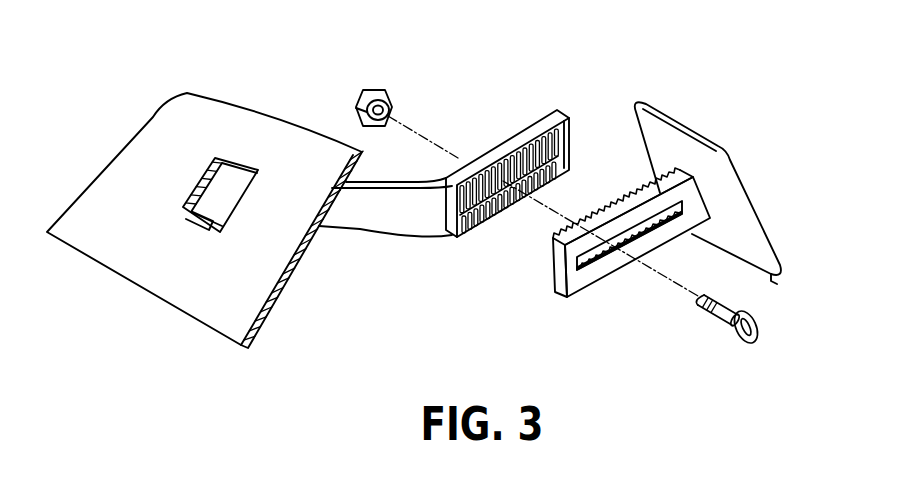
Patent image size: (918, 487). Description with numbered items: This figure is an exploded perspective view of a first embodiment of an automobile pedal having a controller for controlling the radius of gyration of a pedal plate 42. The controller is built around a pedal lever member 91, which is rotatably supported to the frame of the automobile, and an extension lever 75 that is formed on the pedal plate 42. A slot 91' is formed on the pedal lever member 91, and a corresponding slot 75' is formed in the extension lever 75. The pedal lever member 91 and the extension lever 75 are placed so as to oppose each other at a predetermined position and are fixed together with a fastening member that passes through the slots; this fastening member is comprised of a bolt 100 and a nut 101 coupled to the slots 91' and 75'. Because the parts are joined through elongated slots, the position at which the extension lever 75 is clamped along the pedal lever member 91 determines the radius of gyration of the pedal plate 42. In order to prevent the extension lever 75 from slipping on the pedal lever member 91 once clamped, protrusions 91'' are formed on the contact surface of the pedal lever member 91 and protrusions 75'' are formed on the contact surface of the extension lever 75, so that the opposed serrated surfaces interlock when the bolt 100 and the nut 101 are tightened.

The pedal plate 42 is at (750, 194).
The extension lever 75 is at (626, 279).
The slot 75' is at (630, 280).
The protrusions 75'' is at (616, 157).
The pedal lever member 91 is at (444, 216).
The slot 91' is at (509, 216).
The protrusions 91'' is at (493, 230).
The bolt 100 is at (722, 326).
The nut 101 is at (373, 88).